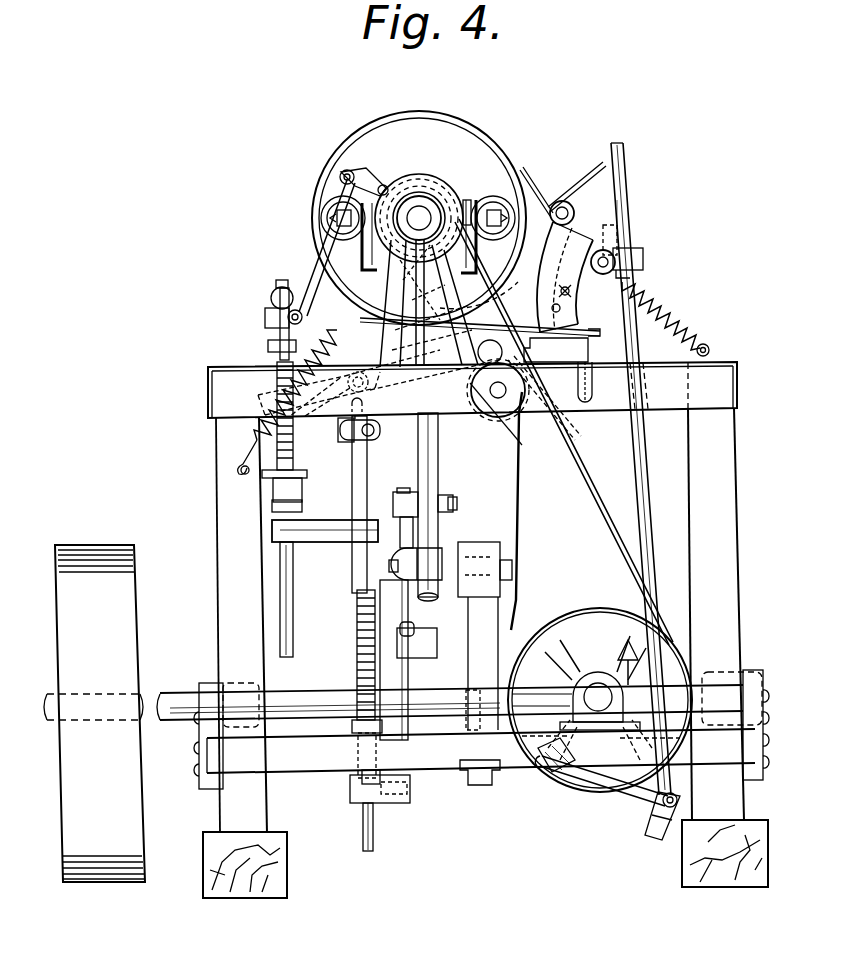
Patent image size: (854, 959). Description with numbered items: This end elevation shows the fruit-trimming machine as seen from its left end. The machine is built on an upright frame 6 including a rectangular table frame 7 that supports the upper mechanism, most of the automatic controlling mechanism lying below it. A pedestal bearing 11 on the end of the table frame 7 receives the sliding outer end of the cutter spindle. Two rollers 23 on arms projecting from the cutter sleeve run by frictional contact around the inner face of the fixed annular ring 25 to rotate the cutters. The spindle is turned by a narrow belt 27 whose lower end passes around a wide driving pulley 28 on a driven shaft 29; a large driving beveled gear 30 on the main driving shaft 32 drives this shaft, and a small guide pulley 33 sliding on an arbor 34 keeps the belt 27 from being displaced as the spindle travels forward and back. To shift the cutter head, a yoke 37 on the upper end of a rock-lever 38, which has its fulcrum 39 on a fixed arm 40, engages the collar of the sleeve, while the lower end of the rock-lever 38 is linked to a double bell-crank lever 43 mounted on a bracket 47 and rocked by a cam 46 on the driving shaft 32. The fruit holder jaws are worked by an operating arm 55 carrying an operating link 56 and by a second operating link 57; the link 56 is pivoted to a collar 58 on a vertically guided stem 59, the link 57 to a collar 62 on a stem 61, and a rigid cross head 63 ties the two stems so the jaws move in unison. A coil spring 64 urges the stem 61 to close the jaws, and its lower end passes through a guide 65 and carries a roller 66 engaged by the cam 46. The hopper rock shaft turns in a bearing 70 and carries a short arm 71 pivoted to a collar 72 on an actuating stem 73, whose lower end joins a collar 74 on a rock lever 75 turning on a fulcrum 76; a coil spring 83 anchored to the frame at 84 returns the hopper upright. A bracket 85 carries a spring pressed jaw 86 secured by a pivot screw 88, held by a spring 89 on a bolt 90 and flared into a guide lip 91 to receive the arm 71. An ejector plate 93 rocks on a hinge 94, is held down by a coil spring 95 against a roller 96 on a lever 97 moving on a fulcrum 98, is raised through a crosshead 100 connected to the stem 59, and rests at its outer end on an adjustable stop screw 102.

The upright frame 6 is at (740, 450).
The table frame 7 is at (724, 368).
The pedestal bearing 11 is at (384, 328).
The rollers 23 is at (498, 200).
The annular race way or ring 25 is at (487, 133).
The narrow belt 27 is at (523, 497).
The wide driving pulley 28 is at (578, 612).
The driven shaft 29 is at (598, 688).
The large driving beveled gear 30 is at (637, 662).
The driving shaft 32 is at (184, 694).
The guide pulley 33 is at (506, 416).
The arbor 34 is at (494, 394).
The yoke 37 is at (470, 200).
The rock-lever 38 is at (418, 454).
The fulcrum 39 is at (430, 548).
The fixed arm 40 is at (405, 535).
The double bell-crank lever 43 is at (440, 522).
The cam 46 is at (412, 680).
The bracket 47 is at (492, 632).
The operating arm 55 is at (358, 178).
The operating link 56 is at (317, 267).
The operating link 57 is at (378, 424).
The collar 58 is at (265, 320).
The vertically guided stem 59 is at (296, 578).
The stem 61 is at (356, 562).
The collar 62 is at (366, 437).
The cross head 63 is at (320, 526).
The coil spring 64 is at (358, 646).
The guide 65 is at (356, 730).
The roller 66 is at (396, 803).
The bearing 70 is at (553, 250).
The short arm 71 is at (605, 250).
The collar 72 is at (645, 258).
The actuating stem 73 is at (628, 200).
The collar 74 is at (656, 830).
The rock lever 75 is at (616, 794).
The fulcrum 76 is at (556, 774).
The coil spring 83 is at (672, 316).
The frame attachment point 84 is at (710, 344).
The bracket 85 is at (583, 207).
The spring pressed jaw 86 is at (630, 208).
The pivot screw 88 is at (561, 308).
The spring 89 is at (570, 291).
The bolt 90 is at (562, 290).
The guide lip 91 is at (598, 198).
The ejector plate 93 is at (571, 345).
The hinge or axis 94 is at (584, 364).
The coil spring 95 is at (256, 434).
The roller 96 is at (479, 323).
The lever 97 is at (299, 437).
The fulcrum 98 is at (380, 389).
The crosshead 100 is at (271, 298).
The adjustable stop screw 102 is at (379, 395).